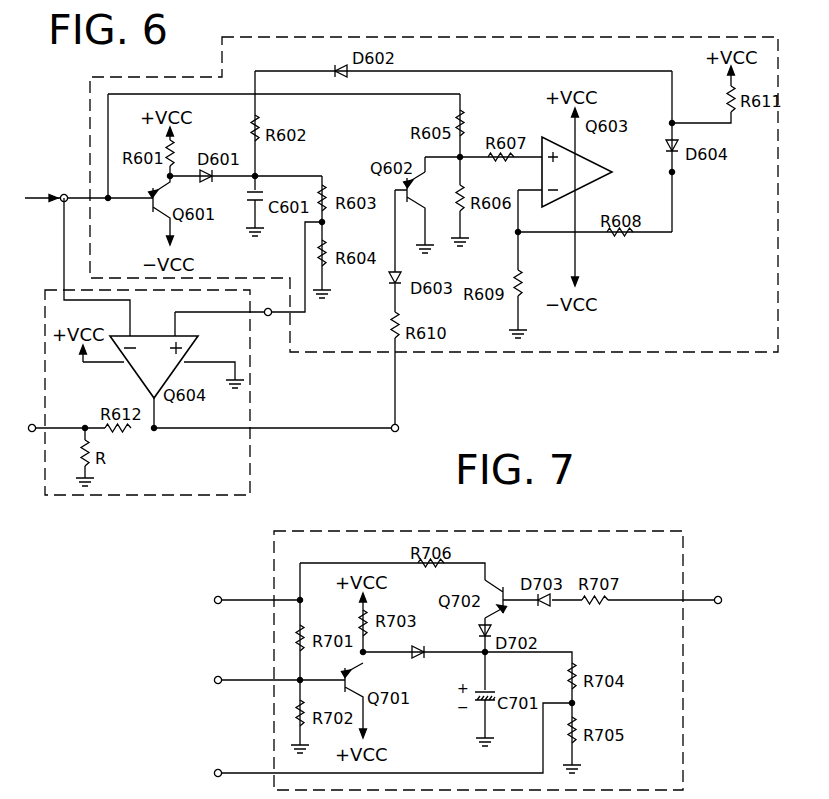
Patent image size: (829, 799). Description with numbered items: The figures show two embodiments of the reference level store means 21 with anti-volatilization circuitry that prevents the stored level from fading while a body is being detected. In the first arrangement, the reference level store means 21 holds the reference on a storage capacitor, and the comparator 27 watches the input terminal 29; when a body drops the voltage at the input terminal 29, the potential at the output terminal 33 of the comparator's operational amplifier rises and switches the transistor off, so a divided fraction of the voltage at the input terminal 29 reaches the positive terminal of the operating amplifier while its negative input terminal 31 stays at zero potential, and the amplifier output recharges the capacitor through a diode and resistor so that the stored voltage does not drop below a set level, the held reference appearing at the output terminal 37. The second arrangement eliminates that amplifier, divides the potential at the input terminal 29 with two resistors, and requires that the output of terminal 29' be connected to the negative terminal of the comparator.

In FIG. 6, the reference level store means 21 is at (434, 183).
In FIG. 7, the reference level store means 21 is at (478, 649).
In FIG. 6, the comparator 27 is at (147, 409).
In FIG. 6, the input terminal 29 is at (89, 186).
In FIG. 7, the input terminal 29 is at (240, 601).
In FIG. 7, the output terminal 29' is at (262, 681).
In FIG. 6, the negative input terminal 31 is at (290, 283).
In FIG. 7, the negative input terminal 31 is at (380, 745).
In FIG. 6, the output terminal 33 is at (58, 416).
In FIG. 6, the output terminal 37 is at (278, 400).
In FIG. 7, the output terminal 37 is at (668, 590).